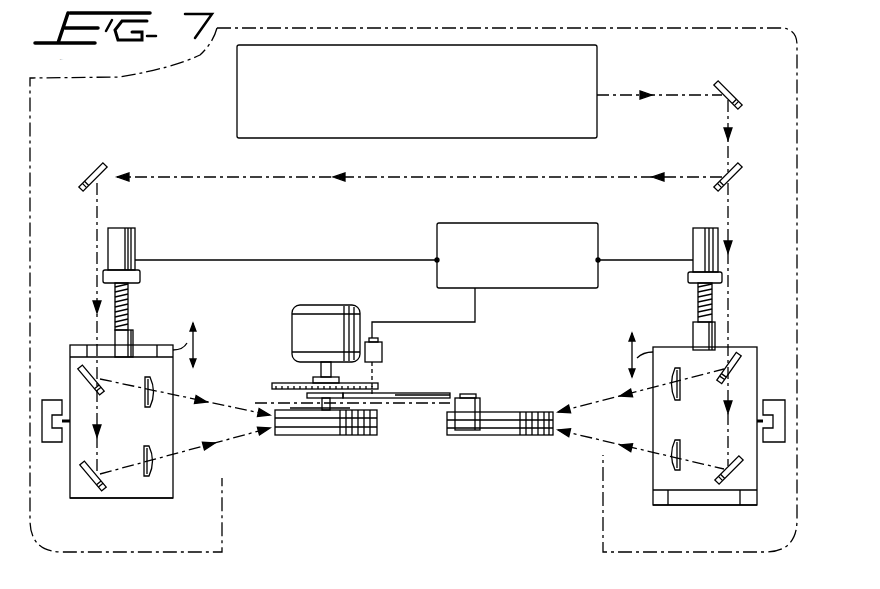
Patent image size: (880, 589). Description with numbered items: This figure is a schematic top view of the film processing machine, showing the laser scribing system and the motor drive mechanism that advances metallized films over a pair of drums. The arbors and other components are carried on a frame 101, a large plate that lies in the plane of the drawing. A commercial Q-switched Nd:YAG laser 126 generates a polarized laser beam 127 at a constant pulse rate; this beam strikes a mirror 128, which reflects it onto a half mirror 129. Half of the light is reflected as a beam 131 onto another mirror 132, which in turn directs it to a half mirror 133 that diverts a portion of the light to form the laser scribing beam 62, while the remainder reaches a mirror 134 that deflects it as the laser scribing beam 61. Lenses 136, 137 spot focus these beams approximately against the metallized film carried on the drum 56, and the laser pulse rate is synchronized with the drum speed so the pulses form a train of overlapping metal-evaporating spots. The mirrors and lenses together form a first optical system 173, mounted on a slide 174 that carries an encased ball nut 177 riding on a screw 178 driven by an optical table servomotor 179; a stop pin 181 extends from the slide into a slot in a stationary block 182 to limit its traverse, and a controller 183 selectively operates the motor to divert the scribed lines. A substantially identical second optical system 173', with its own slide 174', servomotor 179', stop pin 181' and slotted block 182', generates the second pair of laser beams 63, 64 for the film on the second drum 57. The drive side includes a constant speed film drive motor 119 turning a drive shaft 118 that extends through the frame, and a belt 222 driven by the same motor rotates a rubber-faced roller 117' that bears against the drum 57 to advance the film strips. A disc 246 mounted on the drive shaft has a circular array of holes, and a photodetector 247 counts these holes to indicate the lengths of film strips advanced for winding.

The laser 126 is at (437, 106).
The polarized laser beam 127 is at (682, 95).
The mirror 128 is at (736, 90).
The half mirror 129 is at (742, 178).
The beam 131 is at (438, 178).
The mirror 132 is at (90, 182).
The half mirror 133 is at (78, 368).
The mirror 134 is at (88, 493).
The lens 136 is at (155, 468).
The lens 137 is at (156, 408).
The drum 56 is at (298, 436).
The drum 57 is at (490, 436).
The laser scribing beam 61 is at (195, 447).
The laser scribing beam 62 is at (201, 405).
The laser beam 63 is at (620, 443).
The laser beam 64 is at (622, 397).
The frame 101 is at (470, 394).
The rubber-faced roller 117' is at (448, 438).
The drive shaft 118 is at (315, 378).
The film drive motor 119 is at (293, 323).
The first optical system 173 is at (132, 444).
The slide 174 is at (121, 521).
The encased ball nut 177 is at (133, 340).
The screw 178 is at (128, 300).
The optical table servomotor 179 is at (149, 249).
The stop pin 181 is at (50, 456).
The stationary block 182 is at (49, 405).
The controller 183 is at (522, 270).
The belt 222 is at (440, 400).
The disc 246 is at (278, 384).
The photodetector 247 is at (383, 352).
The second optical system 173' is at (714, 444).
The slide 174' is at (684, 517).
The optical table servomotor 179' is at (680, 283).
The stop pin 181' is at (779, 399).
The stationary block 182' is at (778, 453).